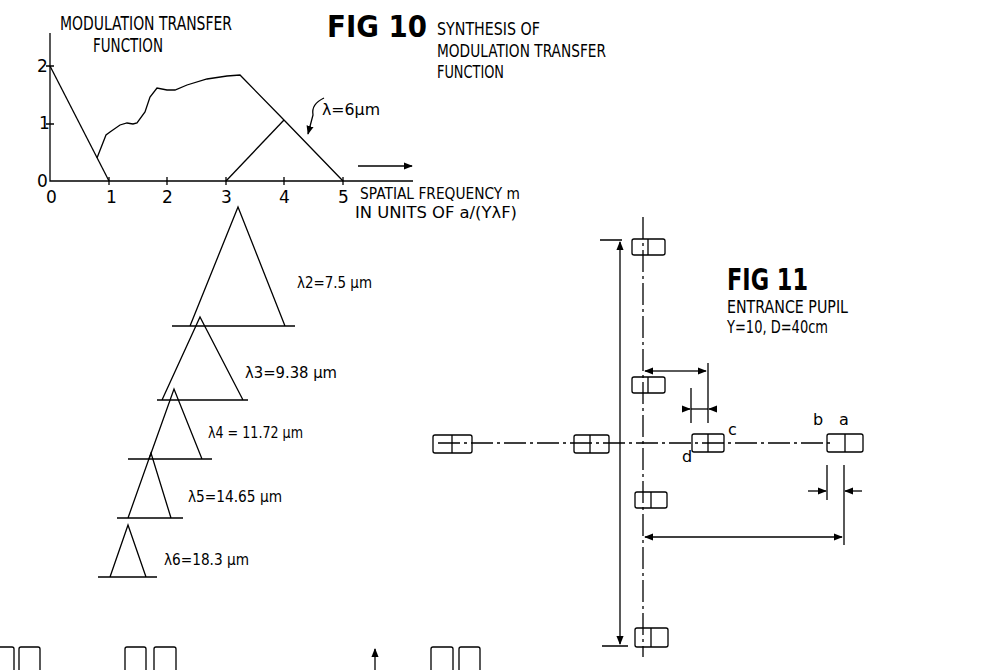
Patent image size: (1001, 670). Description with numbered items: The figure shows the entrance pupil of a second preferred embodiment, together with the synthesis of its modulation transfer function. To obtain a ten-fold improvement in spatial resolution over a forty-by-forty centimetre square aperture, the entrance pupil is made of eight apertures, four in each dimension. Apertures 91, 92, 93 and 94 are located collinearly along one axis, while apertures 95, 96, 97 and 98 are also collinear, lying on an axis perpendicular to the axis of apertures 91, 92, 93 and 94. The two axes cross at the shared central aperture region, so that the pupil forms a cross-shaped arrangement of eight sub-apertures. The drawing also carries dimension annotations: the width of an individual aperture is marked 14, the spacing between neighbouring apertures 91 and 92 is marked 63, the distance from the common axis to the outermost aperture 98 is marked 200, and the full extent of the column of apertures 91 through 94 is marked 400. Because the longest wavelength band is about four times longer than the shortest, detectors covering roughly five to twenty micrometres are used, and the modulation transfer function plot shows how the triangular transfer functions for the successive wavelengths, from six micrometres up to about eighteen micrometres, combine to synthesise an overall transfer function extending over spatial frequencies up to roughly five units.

The aperture 91 is at (658, 256).
The aperture 92 is at (657, 394).
The aperture 93 is at (667, 501).
The aperture 94 is at (668, 637).
The aperture 95 is at (448, 435).
The aperture 96 is at (581, 435).
The aperture 97 is at (712, 452).
The aperture 98 is at (858, 452).
The aperture width dimension 14 is at (772, 463).
The aperture spacing dimension 63 is at (676, 384).
The pupil spacing dimension 200 is at (743, 525).
The pupil height dimension 400 is at (608, 443).